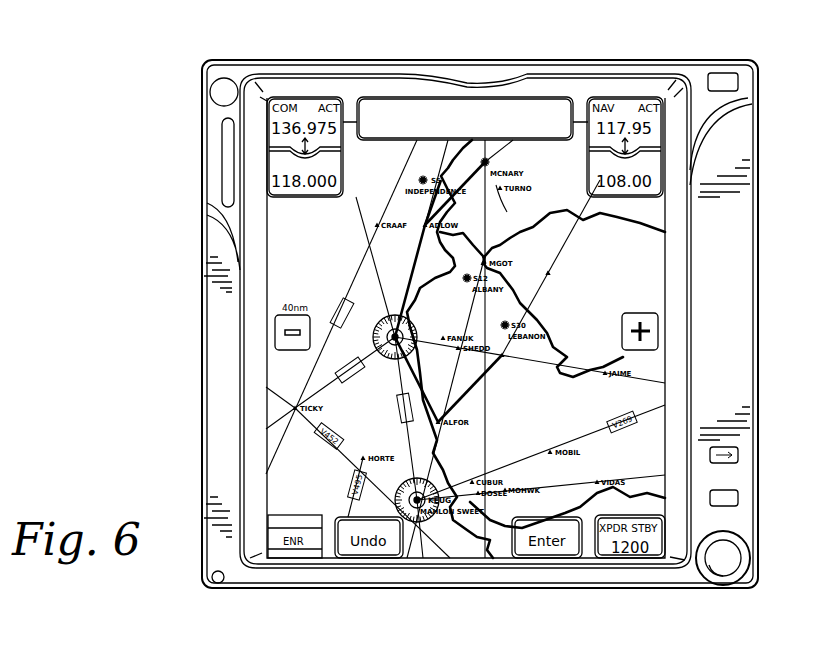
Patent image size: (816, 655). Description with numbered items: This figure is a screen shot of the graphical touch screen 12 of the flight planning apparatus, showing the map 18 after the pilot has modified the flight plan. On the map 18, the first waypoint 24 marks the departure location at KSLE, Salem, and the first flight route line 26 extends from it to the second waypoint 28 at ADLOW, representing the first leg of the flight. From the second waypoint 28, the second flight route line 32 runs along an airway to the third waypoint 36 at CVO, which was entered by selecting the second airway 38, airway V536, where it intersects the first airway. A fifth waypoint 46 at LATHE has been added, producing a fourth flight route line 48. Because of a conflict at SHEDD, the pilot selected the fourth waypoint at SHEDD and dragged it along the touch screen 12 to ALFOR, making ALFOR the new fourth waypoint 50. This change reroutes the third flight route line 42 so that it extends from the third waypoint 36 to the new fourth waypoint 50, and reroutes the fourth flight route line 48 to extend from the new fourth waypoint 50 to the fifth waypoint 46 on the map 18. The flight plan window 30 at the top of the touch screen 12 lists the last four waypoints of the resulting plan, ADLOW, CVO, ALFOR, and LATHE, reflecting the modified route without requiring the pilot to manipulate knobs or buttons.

The graphical touch screen 12 is at (655, 295).
The map 18 is at (470, 540).
The first waypoint 24 is at (470, 147).
The first flight route line 26 is at (548, 273).
The second waypoint 28 is at (440, 210).
The window 30 is at (480, 98).
The second flight route line 32 is at (373, 245).
The third waypoint 36 is at (390, 308).
The second airway 38 is at (323, 392).
The third flight route line 42 is at (400, 382).
The fifth waypoint 46 is at (504, 358).
The fourth flight route line 48 is at (487, 388).
The new fourth waypoint 50 is at (440, 448).